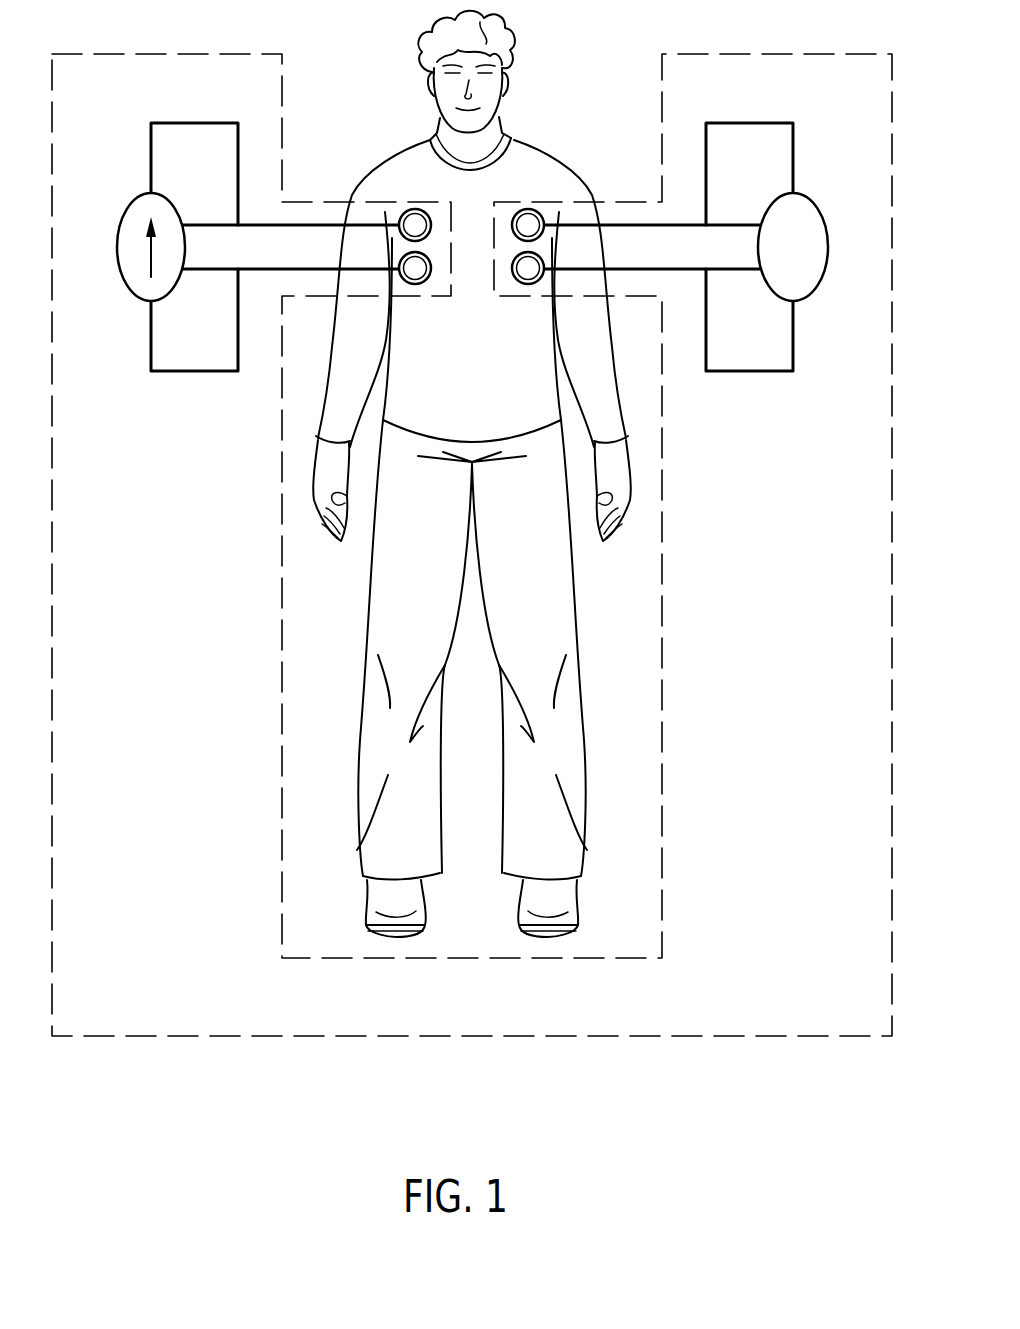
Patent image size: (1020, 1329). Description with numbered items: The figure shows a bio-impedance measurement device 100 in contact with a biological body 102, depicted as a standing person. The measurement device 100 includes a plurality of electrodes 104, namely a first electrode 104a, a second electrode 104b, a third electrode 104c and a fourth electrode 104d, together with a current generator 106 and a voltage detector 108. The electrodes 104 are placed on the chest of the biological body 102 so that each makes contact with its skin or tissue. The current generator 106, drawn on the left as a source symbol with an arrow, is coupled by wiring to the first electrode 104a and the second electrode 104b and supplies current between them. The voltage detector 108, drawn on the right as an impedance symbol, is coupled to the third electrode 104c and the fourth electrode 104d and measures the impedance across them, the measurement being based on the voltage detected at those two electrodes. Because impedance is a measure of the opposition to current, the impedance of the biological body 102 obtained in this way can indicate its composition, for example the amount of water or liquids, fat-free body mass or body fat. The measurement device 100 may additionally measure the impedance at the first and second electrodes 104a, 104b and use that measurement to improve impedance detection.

The bio-impedance measurement device 100 is at (893, 114).
The biological body 102 is at (502, 33).
The electrodes 104 is at (477, 218).
The first electrode 104a is at (408, 210).
The second electrode 104b is at (400, 257).
The third electrode 104c is at (532, 210).
The fourth electrode 104d is at (546, 257).
The current generator 106 is at (122, 215).
The voltage detector 108 is at (822, 277).